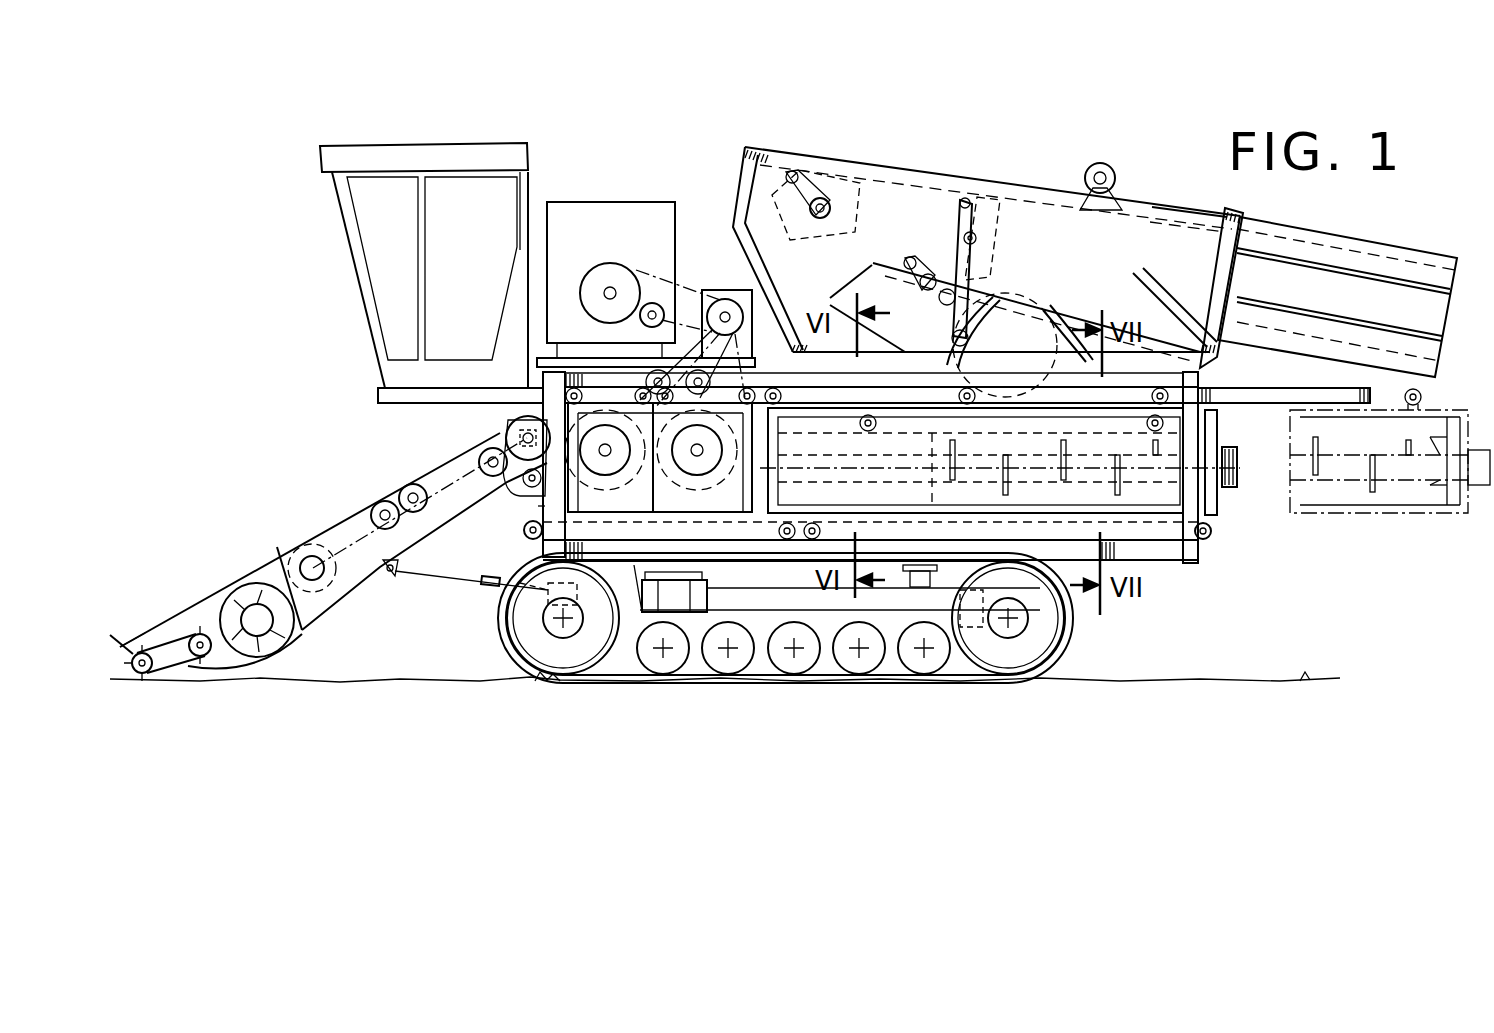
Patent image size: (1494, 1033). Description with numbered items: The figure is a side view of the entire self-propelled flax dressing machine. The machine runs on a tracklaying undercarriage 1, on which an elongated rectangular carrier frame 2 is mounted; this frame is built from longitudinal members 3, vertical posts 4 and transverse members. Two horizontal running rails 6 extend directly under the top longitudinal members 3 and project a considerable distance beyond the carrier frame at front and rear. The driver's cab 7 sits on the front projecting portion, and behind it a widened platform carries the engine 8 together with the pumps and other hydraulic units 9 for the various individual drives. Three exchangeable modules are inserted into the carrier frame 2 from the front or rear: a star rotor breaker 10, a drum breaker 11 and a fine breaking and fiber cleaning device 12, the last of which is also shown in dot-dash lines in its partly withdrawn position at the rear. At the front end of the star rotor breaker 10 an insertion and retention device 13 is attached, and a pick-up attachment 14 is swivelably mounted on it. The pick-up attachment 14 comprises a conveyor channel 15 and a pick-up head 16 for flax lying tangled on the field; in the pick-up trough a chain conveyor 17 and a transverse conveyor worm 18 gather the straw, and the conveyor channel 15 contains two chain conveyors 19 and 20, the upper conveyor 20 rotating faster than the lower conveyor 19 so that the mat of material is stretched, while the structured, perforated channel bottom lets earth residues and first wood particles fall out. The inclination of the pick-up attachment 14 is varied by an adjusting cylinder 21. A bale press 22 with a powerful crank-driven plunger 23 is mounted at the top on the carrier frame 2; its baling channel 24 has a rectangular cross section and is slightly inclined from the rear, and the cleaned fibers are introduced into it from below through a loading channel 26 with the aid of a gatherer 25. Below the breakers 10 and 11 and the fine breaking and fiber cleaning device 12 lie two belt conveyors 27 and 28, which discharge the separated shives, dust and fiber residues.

The tracklaying undercarriage 1 is at (487, 636).
The carrier frame 2 is at (1165, 577).
The longitudinal members 3 is at (780, 388).
The vertical posts 4 is at (538, 506).
The running rails 6 is at (416, 405).
The driver's cab 7 is at (378, 258).
The engine 8 is at (615, 215).
The hydraulic units 9 is at (727, 294).
The star rotor breaker 10 is at (612, 482).
The drum breaker 11 is at (702, 485).
The fine breaking and fiber cleaning device 12 is at (951, 496).
The insertion and retention device 13 is at (505, 425).
The pick-up attachment 14 is at (270, 505).
The conveyor channel 15 is at (340, 582).
The pick-up head 16 is at (180, 612).
The chain conveyor 17 is at (156, 660).
The transverse conveyor worm 18 is at (270, 652).
The lower chain conveyor 19 is at (333, 530).
The upper chain conveyor 20 is at (441, 473).
The adjusting cylinder 21 is at (485, 592).
The bale press 22 is at (912, 147).
The crank-driven plunger 23 is at (990, 245).
The baling channel 24 is at (1112, 242).
The gatherer 25 is at (950, 320).
The loading channel 26 is at (1003, 322).
The belt conveyor 27 is at (523, 532).
The belt conveyor 28 is at (1211, 535).